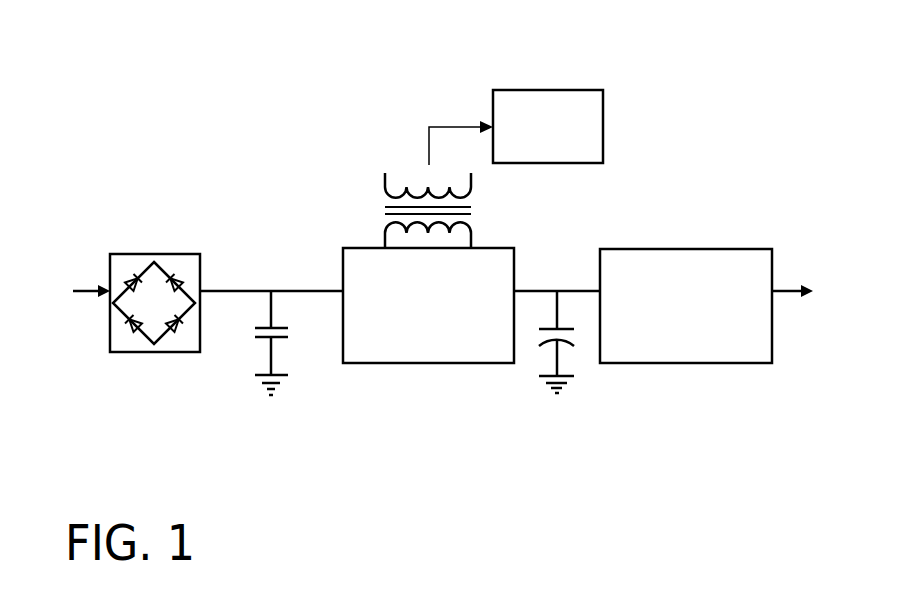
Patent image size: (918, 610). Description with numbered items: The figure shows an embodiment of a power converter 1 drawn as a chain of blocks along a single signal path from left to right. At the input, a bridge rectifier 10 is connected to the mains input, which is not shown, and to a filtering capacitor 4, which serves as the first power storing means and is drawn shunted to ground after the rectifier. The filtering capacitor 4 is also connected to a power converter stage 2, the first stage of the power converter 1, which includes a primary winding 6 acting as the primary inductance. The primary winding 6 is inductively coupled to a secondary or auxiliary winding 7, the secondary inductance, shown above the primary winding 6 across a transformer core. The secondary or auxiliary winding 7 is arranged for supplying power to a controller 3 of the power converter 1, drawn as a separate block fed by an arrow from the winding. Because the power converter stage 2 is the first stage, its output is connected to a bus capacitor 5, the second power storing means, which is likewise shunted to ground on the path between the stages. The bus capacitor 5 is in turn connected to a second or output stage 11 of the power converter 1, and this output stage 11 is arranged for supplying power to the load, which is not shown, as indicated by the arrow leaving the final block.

The power converter 1 is at (345, 105).
The power converter stage 2 is at (433, 363).
The controller 3 is at (603, 133).
The filtering capacitor 4 is at (288, 338).
The bus capacitor 5 is at (572, 340).
The primary winding 6 is at (386, 232).
The secondary or auxiliary winding 7 is at (386, 178).
The bridge rectifier 10 is at (160, 352).
The output stage 11 is at (690, 363).